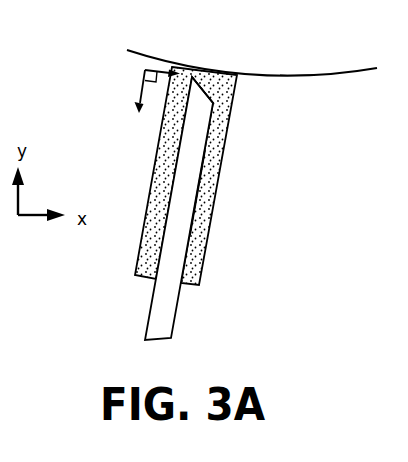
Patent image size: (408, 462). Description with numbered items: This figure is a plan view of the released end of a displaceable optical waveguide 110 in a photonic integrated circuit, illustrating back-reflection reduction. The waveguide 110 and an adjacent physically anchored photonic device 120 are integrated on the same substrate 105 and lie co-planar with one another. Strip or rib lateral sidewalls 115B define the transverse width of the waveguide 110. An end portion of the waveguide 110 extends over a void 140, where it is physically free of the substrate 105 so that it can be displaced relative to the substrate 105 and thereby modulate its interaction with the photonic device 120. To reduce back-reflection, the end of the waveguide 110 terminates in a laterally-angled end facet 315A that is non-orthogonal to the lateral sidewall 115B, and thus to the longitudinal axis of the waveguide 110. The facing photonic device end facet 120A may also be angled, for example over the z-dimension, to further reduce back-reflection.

The substrate 105 is at (327, 176).
The optical waveguide 110 is at (178, 174).
The waveguide lateral sidewall 115B is at (206, 194).
The photonic device 120 is at (257, 60).
The photonic device end facet 120A is at (298, 82).
The void 140 is at (172, 131).
The bevel tip 315A is at (222, 102).